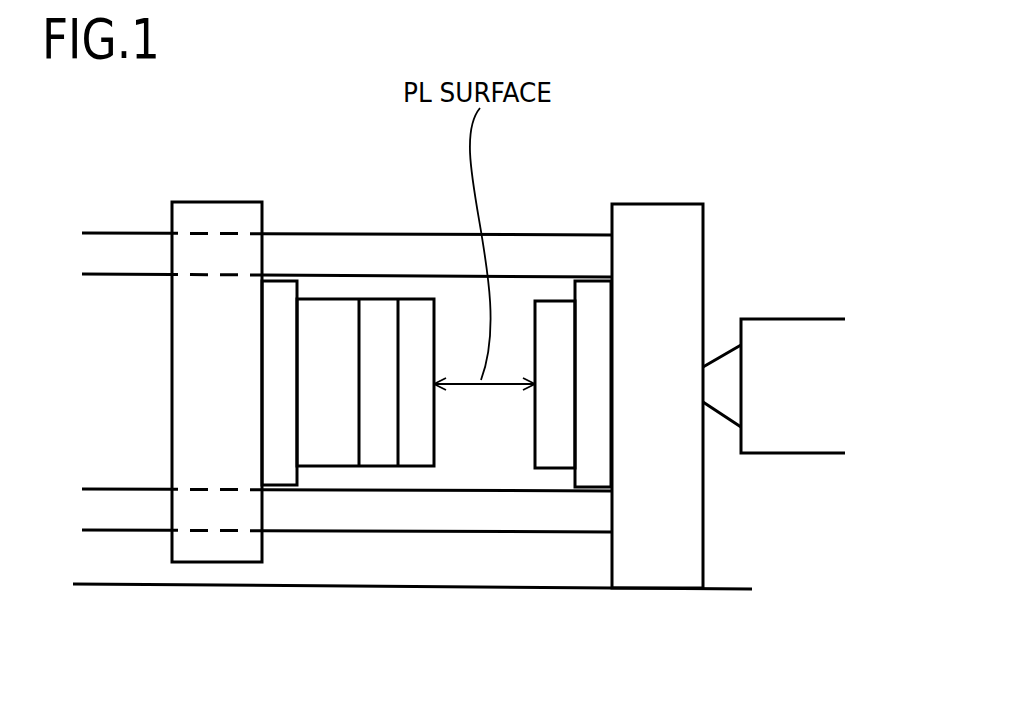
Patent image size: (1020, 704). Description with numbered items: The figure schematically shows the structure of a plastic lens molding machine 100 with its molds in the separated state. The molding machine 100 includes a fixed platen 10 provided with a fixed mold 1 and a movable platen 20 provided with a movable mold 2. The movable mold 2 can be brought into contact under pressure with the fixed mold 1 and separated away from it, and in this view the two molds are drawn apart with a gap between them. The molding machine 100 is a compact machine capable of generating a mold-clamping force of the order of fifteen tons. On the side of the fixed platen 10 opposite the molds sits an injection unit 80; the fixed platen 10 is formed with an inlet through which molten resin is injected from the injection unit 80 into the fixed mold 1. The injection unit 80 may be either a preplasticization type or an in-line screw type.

The plastic lens molding machine 100 is at (660, 121).
The fixed platen 10 is at (663, 222).
The movable platen 20 is at (219, 210).
The fixed mold 1 is at (552, 312).
The movable mold 2 is at (418, 312).
The injection unit 80 is at (792, 338).